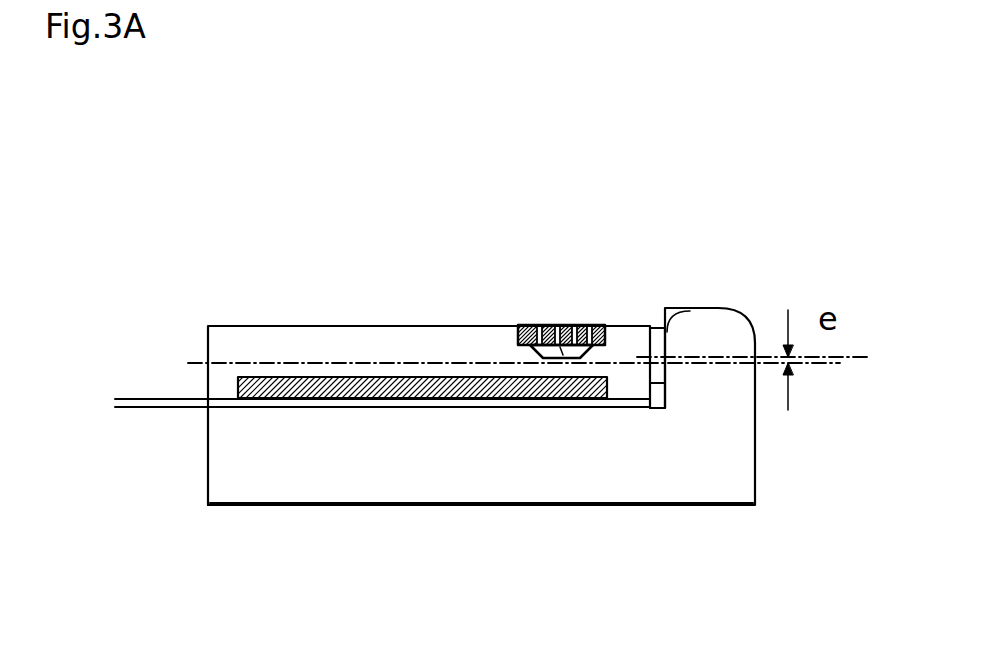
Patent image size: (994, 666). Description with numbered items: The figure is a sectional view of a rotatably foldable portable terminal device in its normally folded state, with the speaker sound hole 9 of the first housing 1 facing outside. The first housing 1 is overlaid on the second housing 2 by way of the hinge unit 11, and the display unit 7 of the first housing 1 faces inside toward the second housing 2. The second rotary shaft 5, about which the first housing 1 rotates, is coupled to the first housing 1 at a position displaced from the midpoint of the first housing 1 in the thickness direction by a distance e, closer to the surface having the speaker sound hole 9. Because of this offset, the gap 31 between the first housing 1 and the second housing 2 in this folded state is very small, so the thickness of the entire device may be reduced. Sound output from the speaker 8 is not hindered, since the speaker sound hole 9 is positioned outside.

The first housing 1 is at (317, 345).
The second housing 2 is at (502, 488).
The second rotary shaft 5 is at (657, 357).
The display unit 7 is at (363, 380).
The speaker 8 is at (547, 325).
The speaker sound hole 9 is at (585, 327).
The hinge unit 11 is at (672, 307).
The gap 31 is at (155, 452).